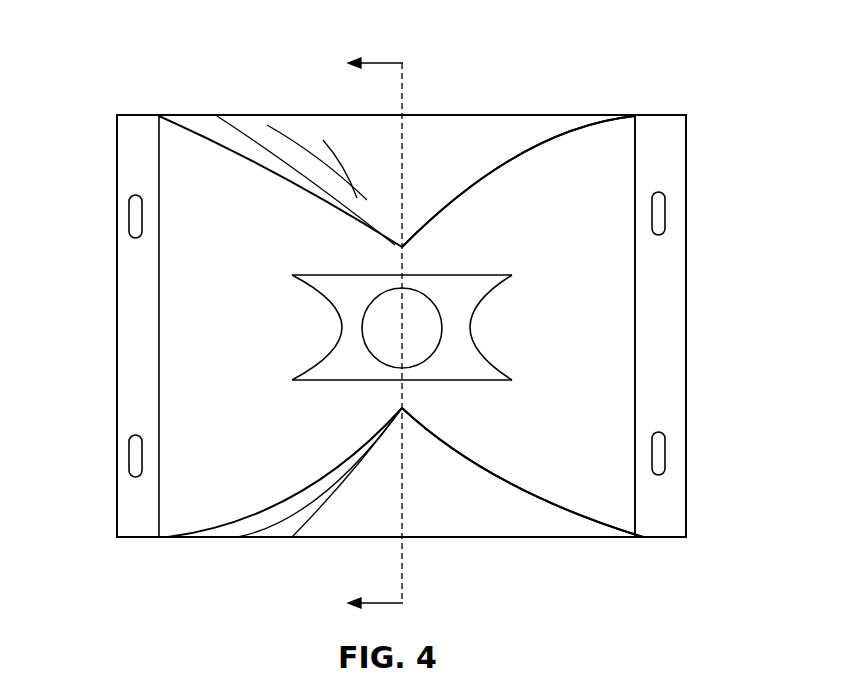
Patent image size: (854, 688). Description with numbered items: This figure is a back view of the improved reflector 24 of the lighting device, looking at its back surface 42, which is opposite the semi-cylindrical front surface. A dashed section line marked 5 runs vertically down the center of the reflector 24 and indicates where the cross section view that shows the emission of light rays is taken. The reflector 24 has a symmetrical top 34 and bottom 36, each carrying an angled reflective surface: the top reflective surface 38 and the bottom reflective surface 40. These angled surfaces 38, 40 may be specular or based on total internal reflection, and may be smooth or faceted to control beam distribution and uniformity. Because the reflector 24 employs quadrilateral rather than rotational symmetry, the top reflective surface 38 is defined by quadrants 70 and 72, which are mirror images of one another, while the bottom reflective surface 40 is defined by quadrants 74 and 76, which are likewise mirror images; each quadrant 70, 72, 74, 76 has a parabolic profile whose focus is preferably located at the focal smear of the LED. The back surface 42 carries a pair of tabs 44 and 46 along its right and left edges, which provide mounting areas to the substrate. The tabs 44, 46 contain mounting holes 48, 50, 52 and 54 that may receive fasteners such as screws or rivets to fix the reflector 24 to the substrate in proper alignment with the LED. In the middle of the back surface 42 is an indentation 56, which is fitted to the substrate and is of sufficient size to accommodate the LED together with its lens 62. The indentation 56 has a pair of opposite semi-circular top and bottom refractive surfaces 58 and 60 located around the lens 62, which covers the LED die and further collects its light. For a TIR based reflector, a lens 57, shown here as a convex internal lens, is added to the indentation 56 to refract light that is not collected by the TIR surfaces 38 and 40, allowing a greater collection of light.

The reflector 24 is at (90, 68).
The cross section view 5 is at (365, 334).
The top 34 is at (415, 116).
The bottom 36 is at (468, 537).
The top reflective surface 38 is at (550, 143).
The bottom reflective surface 40 is at (592, 522).
The back surface 42 is at (614, 305).
The tab 44 is at (663, 537).
The tab 46 is at (140, 537).
The mounting hole 48 is at (665, 212).
The mounting hole 50 is at (665, 452).
The mounting hole 52 is at (128, 215).
The mounting hole 54 is at (128, 455).
The indentation 56 is at (342, 333).
The lens 57 is at (472, 328).
The top refractive surface 58 is at (377, 275).
The bottom refractive surface 60 is at (377, 380).
The lens 62 is at (414, 305).
The quadrant 70 is at (483, 133).
The quadrant 72 is at (210, 125).
The quadrant 74 is at (545, 527).
The quadrant 76 is at (277, 527).